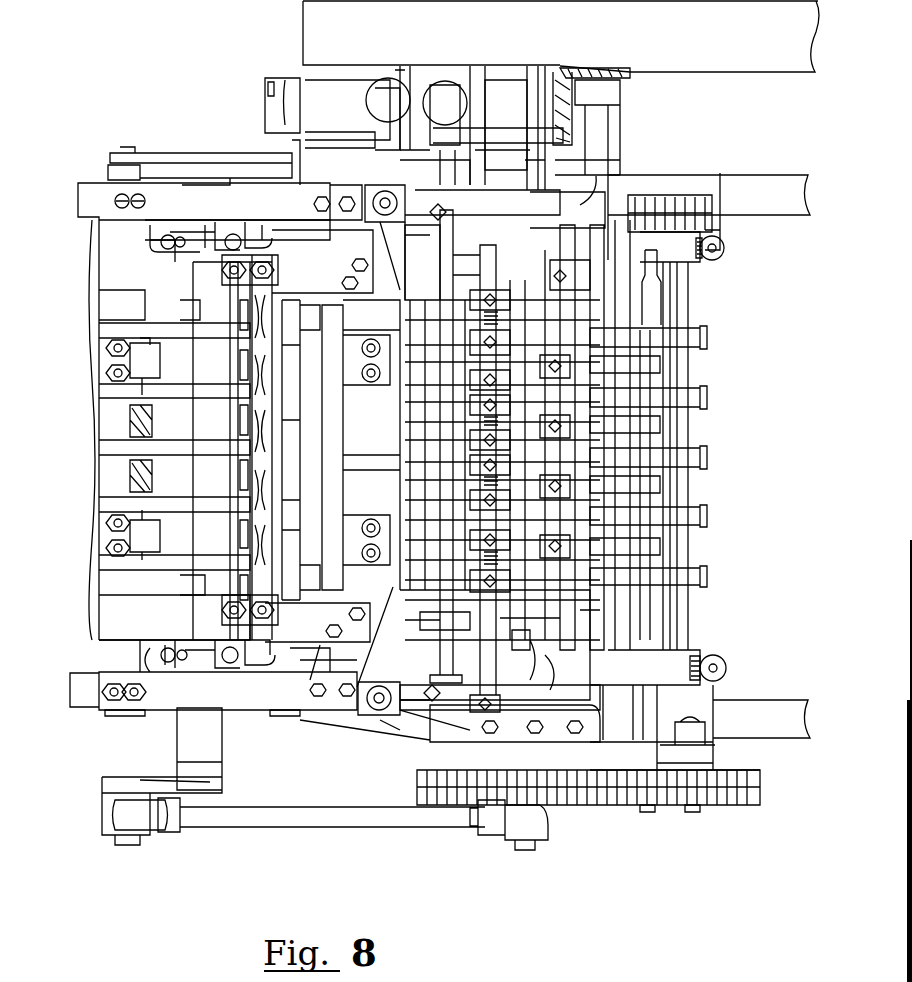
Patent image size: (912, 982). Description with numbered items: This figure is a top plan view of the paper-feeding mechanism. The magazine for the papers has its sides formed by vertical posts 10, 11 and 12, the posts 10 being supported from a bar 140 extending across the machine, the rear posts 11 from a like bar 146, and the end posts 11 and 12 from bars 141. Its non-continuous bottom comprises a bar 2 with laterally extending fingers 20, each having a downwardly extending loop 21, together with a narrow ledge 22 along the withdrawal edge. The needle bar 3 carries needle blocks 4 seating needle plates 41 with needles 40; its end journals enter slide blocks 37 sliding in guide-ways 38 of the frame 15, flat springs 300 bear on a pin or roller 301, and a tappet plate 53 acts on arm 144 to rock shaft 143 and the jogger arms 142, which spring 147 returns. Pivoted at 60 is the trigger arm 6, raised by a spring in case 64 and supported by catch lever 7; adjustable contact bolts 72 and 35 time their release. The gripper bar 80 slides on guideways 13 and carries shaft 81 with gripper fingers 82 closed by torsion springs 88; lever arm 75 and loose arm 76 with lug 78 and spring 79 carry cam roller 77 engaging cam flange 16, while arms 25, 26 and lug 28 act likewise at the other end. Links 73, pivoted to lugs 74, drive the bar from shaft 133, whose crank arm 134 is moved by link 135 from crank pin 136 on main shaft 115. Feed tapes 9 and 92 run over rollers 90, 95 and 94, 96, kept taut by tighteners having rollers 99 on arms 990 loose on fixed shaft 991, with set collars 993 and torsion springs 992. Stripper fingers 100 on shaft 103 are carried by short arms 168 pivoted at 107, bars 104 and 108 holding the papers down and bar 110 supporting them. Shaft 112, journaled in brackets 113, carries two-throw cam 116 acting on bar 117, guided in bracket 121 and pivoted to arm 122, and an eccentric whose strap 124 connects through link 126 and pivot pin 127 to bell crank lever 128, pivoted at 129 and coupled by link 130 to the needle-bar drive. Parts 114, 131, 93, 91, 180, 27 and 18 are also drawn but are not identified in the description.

The brackets 113 is at (268, 86).
The link 126 is at (372, 80).
The eccentric strap 124 is at (408, 75).
The bar 117 is at (440, 82).
The two throw cam 116 is at (478, 75).
The frame member 114 is at (575, 68).
The shaft 112 is at (350, 88).
The pivot 129 is at (275, 130).
The shaft 133 is at (205, 175).
The link 130 is at (215, 160).
The clamp 131 is at (112, 170).
The pivot pin 127 is at (380, 120).
The bell crank lever 128 is at (303, 160).
The bracket 121 is at (441, 162).
The arm 122 is at (515, 140).
The main shaft 115 is at (598, 124).
The pivot 107 is at (598, 157).
The frame 15 is at (85, 198).
The catch lever 7 is at (152, 240).
The slide block 37 is at (205, 235).
The contact bolt 35 is at (240, 235).
The trigger arm 6 is at (258, 235).
The bar 108 is at (478, 212).
The shaft 81 is at (512, 245).
The lever arm 75 is at (535, 250).
The lug 78 is at (548, 260).
The cam roller 77 is at (590, 250).
The lever arm 76 is at (559, 222).
The roller 93 is at (370, 240).
The cam flange 16 is at (428, 240).
The lugs 74 is at (468, 275).
The actuating link 73 is at (411, 450).
The short arms 168 is at (540, 285).
The flat springs 300 is at (175, 608).
The arm 144 is at (150, 300).
The needle bar 3 is at (195, 265).
The posts 11 is at (240, 298).
The bars 141 is at (303, 272).
The bar 146 is at (110, 302).
The tappet plate 53 is at (132, 582).
The pin or roller 301 is at (155, 320).
The fingers 20 is at (221, 414).
The shaft 143 is at (148, 376).
The jogger arms 142 is at (130, 418).
The loop 21 is at (178, 395).
The needle carrying blocks 4 is at (238, 420).
The bar 2 is at (261, 422).
The needles 40 is at (235, 470).
The spring 147 is at (148, 522).
The post 12 is at (230, 590).
The contact bolt 72 is at (178, 648).
The pivot 60 is at (290, 622).
The needle plates 41 is at (303, 622).
The case 64 is at (145, 665).
The guide-ways 38 is at (195, 675).
The crank arm 134 is at (148, 780).
The link 135 is at (305, 806).
The crank pin 136 is at (530, 850).
The guideways 13 is at (395, 305).
The posts 10 is at (338, 342).
The feed tape 9 is at (305, 445).
The roller 90 is at (306, 422).
The roller 94 is at (395, 408).
The rollers 99 is at (450, 440).
The bar 140 is at (364, 476).
The stripper fingers 100 is at (465, 480).
The ledge 22 is at (335, 578).
The brace 91 is at (275, 672).
The fixed shaft 991 is at (480, 200).
The lever arm 25 is at (504, 687).
The lug 28 is at (529, 687).
The lever arm 26 is at (557, 687).
The gripper bar 80 is at (478, 325).
The set collars 993 is at (468, 346).
The arms 990 is at (515, 469).
The torsion springs 992 is at (485, 392).
The bar 110 is at (560, 330).
The shaft 103 is at (565, 325).
The gripper fingers 82 is at (523, 365).
The torsion springs 88 is at (539, 395).
The roller 95 is at (660, 318).
The roller 96 is at (690, 326).
The feed tape 92 is at (700, 338).
The bar 104 is at (660, 295).
The lever 180 is at (541, 573).
The spring 79 is at (541, 627).
The shaft 27 is at (595, 643).
The block 18 is at (593, 666).